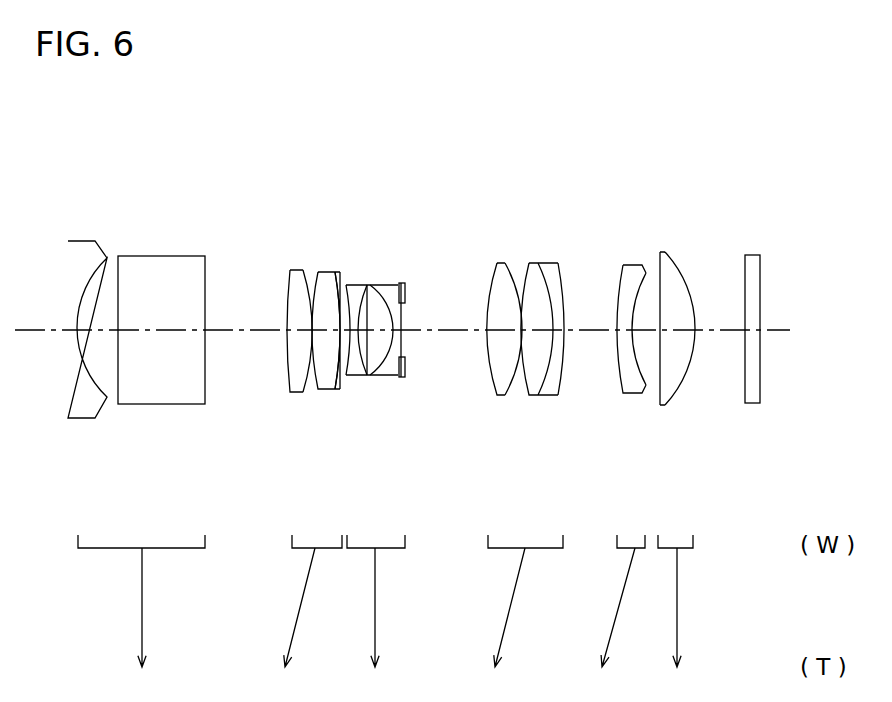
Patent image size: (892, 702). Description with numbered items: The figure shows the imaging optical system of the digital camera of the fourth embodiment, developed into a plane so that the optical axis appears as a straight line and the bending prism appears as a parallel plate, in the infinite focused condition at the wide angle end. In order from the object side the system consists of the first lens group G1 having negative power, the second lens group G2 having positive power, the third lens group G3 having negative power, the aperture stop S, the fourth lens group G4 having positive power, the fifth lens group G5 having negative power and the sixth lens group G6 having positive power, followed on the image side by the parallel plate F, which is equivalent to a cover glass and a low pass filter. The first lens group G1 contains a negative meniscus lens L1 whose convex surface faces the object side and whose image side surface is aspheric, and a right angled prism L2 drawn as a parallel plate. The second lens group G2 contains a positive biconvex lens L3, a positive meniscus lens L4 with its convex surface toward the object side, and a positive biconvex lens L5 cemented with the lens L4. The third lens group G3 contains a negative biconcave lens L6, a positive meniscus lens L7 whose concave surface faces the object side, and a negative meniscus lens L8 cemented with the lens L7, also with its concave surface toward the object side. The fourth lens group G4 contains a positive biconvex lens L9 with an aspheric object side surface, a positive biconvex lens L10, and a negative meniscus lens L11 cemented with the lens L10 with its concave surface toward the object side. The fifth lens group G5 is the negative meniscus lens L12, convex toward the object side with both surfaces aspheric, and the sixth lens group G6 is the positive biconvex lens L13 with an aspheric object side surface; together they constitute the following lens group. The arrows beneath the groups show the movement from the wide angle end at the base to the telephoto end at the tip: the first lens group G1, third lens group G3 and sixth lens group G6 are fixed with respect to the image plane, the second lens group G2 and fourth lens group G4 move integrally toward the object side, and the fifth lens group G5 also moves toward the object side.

The negative meniscus lens L1 is at (84, 264).
The right angled prism L2 is at (150, 387).
The positive biconvex lens L3 is at (338, 272).
The positive meniscus lens L4 is at (332, 375).
The positive biconvex lens L5 is at (300, 280).
The negative biconcave lens L6 is at (354, 372).
The positive meniscus lens L7 is at (373, 295).
The negative meniscus lens L8 is at (387, 376).
The positive biconvex lens L9 is at (503, 276).
The positive biconvex lens L10 is at (534, 375).
The negative meniscus lens L11 is at (548, 275).
The negative meniscus lens L12 is at (630, 375).
The positive biconvex lens L13 is at (662, 263).
The aperture stop S is at (402, 283).
The parallel plate F is at (752, 393).
The first lens group G1 is at (134, 601).
The second lens group G2 is at (301, 601).
The third lens group G3 is at (385, 601).
The fourth lens group G4 is at (516, 601).
The fifth lens group G5 is at (614, 601).
The sixth lens group G6 is at (687, 601).